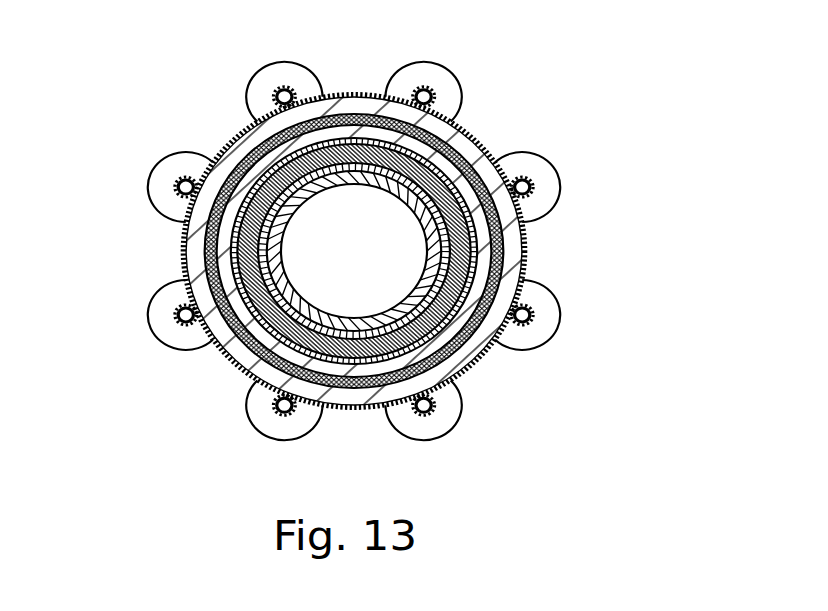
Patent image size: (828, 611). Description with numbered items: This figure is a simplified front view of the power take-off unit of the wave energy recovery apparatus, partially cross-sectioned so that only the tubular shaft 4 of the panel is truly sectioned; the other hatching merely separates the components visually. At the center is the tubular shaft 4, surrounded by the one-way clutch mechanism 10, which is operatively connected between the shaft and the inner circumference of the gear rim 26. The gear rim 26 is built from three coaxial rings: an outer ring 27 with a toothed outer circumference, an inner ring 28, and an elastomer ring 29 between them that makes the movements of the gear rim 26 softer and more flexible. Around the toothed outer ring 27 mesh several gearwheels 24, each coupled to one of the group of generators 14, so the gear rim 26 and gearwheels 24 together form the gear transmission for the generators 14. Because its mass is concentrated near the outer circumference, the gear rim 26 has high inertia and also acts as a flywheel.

The tubular shaft 4 is at (332, 182).
The one-way clutch mechanism 10 is at (272, 335).
The generators 14 is at (457, 90).
The gearwheels 24 is at (178, 182).
The gear rim 26 is at (490, 366).
The outer ring 27 is at (528, 268).
The inner ring 28 is at (485, 240).
The elastomer ring 29 is at (208, 253).